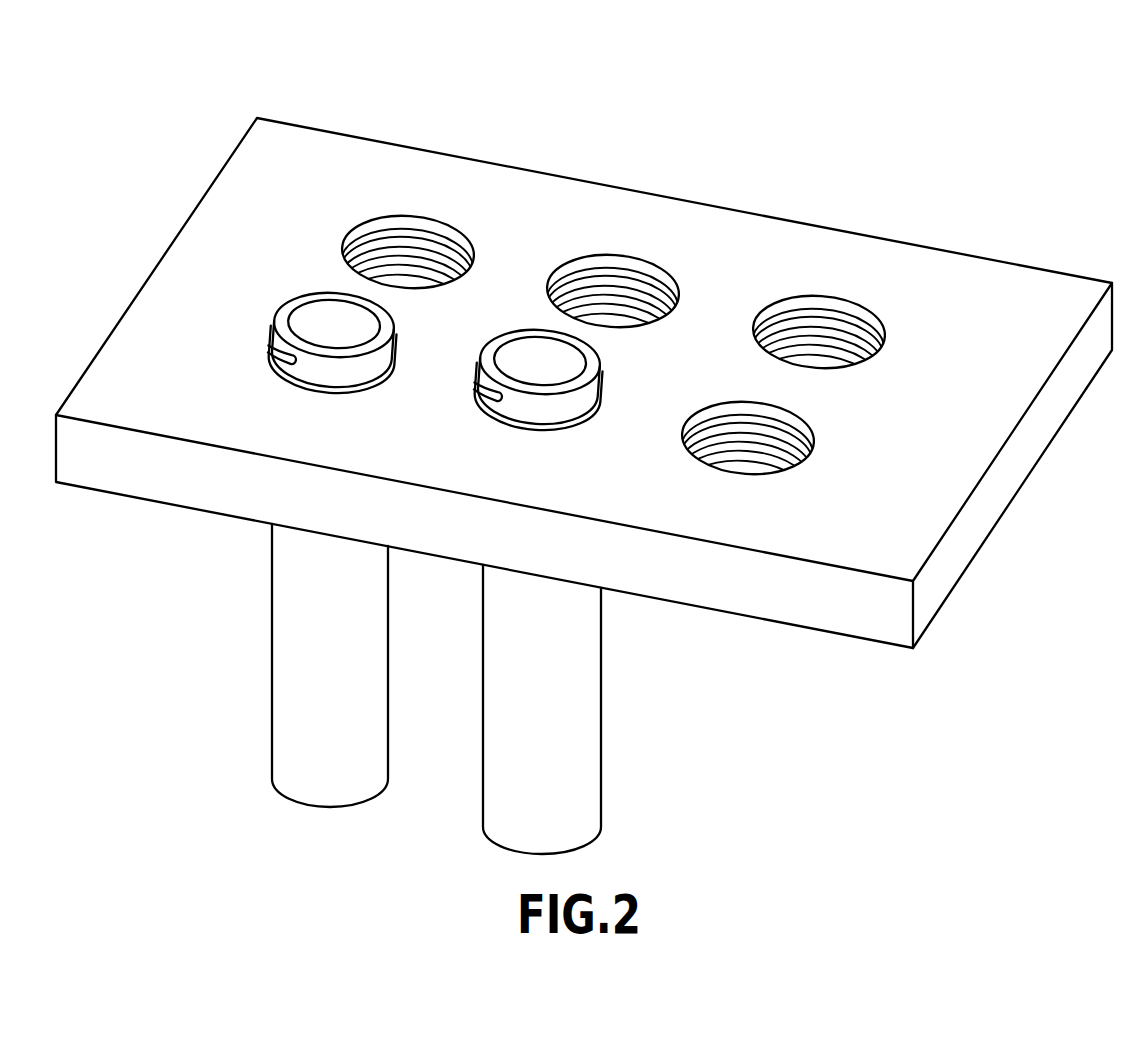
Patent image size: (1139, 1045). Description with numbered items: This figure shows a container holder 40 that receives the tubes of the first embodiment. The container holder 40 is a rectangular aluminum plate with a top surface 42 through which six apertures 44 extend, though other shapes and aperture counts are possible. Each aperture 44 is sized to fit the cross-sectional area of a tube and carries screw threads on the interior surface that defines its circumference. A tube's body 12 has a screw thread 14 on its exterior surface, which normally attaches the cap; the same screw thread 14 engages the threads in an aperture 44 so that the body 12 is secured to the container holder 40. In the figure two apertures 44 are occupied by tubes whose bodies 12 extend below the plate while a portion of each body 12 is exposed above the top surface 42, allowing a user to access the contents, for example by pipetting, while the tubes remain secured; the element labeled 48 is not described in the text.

The fixture assembly 40 is at (587, 341).
The plate 42 is at (915, 492).
The through hole 44 is at (745, 475).
The threaded hole 48 is at (816, 320).
The plug 14 is at (290, 368).
The cylindrical pin 12 is at (291, 705).